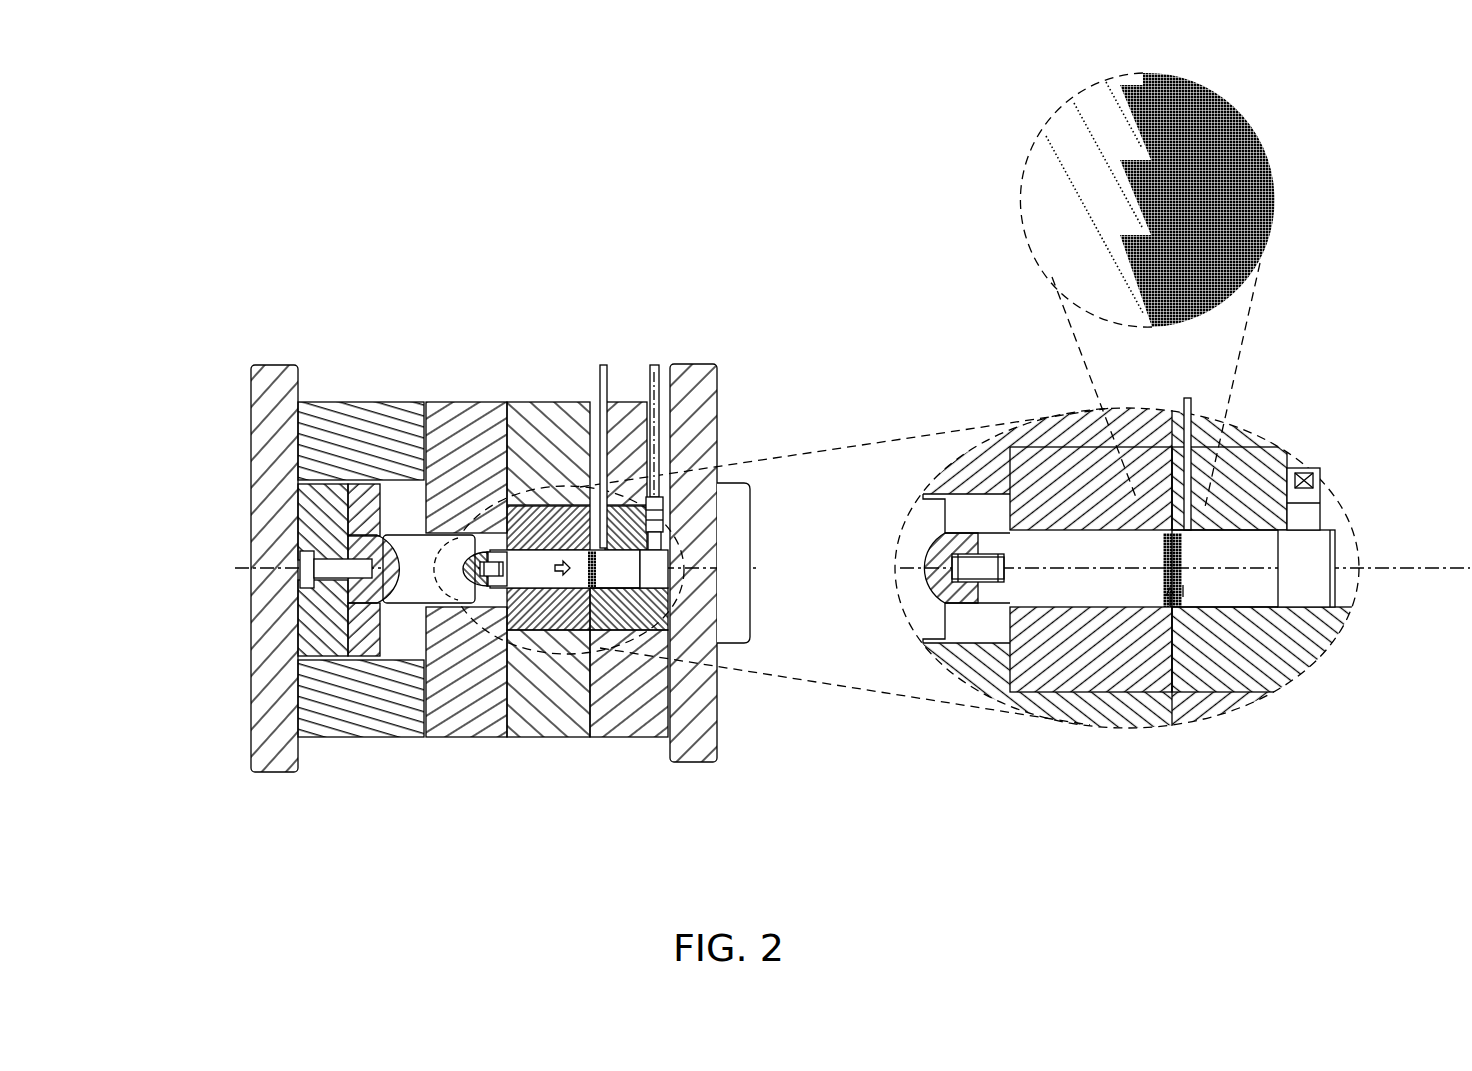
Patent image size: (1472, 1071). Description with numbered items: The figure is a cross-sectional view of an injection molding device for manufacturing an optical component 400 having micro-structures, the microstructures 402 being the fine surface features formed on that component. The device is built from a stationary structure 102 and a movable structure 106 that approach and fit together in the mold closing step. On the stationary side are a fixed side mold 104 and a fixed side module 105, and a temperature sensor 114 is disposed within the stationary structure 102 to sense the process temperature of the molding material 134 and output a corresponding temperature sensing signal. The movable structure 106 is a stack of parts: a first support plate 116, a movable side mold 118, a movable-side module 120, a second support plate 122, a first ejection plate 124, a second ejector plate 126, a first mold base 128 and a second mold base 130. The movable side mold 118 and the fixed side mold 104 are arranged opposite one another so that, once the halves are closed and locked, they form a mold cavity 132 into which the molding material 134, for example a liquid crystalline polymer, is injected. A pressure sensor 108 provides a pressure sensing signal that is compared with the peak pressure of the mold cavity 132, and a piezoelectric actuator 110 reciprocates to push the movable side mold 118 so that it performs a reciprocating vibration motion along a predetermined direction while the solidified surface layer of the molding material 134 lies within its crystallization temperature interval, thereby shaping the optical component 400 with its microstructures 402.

The stationary structure 102 is at (668, 718).
The fixed side mold 104 is at (612, 590).
The fixed side module 105 is at (640, 613).
The movable structure 106 is at (146, 468).
The pressure sensor 108 is at (656, 366).
The piezoelectric actuator 110 is at (400, 593).
The temperature sensor 114 is at (604, 366).
The first support plate 116 is at (525, 404).
The movable side mold 118 is at (522, 557).
The movable-side module 120 is at (508, 613).
The second support plate 122 is at (455, 404).
The first ejection plate 124 is at (366, 496).
The second ejector plate 126 is at (308, 496).
The first mold base 128 is at (324, 718).
The second mold base 130 is at (275, 757).
The mold cavity 132 is at (1172, 590).
The molding material 134 is at (1213, 183).
The optical component 400 is at (1183, 576).
The microstructures 402 is at (1133, 230).